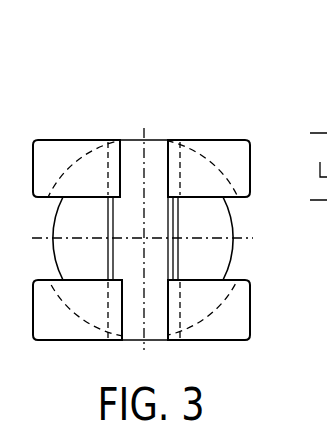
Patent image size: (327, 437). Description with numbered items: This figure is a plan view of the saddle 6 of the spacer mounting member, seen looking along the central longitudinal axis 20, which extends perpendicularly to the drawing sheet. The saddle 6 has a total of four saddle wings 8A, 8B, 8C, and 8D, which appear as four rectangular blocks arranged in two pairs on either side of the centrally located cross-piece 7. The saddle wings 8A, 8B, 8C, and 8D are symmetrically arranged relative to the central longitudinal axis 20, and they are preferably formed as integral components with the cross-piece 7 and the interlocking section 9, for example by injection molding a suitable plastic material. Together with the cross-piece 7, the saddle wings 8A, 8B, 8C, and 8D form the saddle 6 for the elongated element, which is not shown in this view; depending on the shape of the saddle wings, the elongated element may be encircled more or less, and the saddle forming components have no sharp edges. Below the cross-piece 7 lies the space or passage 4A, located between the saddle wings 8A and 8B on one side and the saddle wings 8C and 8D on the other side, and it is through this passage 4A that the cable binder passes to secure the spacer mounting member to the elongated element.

The saddle 6 is at (185, 112).
The cross-piece 7 is at (155, 150).
The saddle wing 8A is at (68, 153).
The saddle wing 8B is at (230, 150).
The saddle wing 8C is at (62, 327).
The saddle wing 8D is at (242, 327).
The passage 4A is at (78, 216).
The interlocking section 9 is at (218, 223).
The central longitudinal axis 20 is at (143, 238).